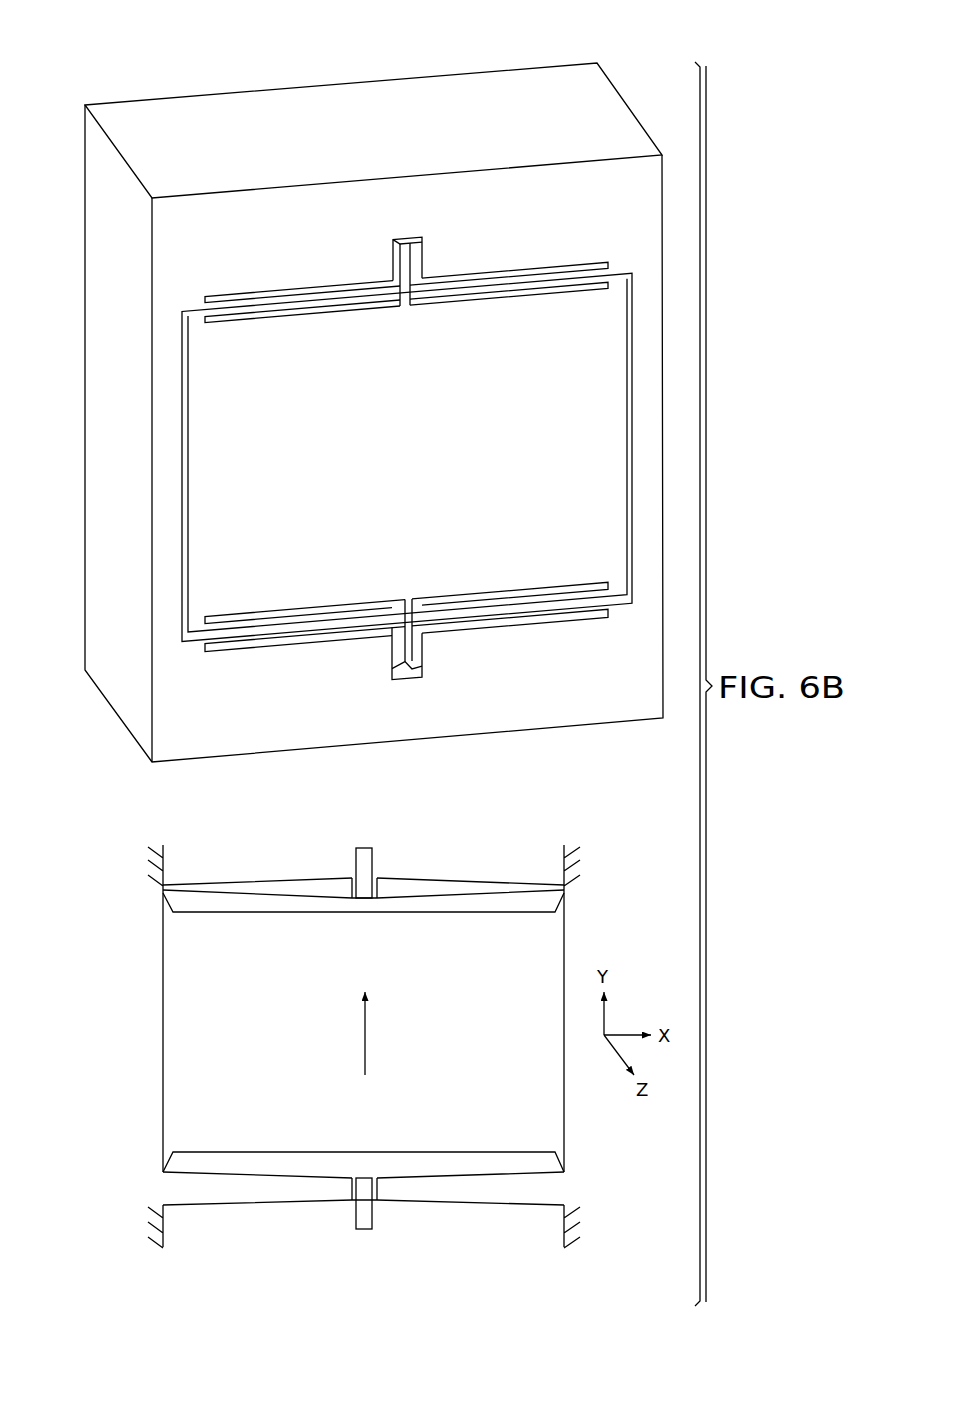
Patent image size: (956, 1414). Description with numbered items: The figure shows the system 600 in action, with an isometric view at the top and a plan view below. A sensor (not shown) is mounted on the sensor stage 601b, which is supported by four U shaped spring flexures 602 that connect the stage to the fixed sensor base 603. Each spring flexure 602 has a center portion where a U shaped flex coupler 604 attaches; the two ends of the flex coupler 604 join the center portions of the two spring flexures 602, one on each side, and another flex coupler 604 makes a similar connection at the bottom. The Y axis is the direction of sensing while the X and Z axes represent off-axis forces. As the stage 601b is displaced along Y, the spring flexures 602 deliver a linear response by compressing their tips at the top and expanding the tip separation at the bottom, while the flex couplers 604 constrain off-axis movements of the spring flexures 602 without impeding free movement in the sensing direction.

The system 600 is at (89, 67).
The sensor stage 601b is at (288, 1045).
The U shaped spring flexure 602 is at (259, 865).
The fixed sensor base 603 is at (139, 861).
The U shaped flex coupler 604 is at (366, 837).